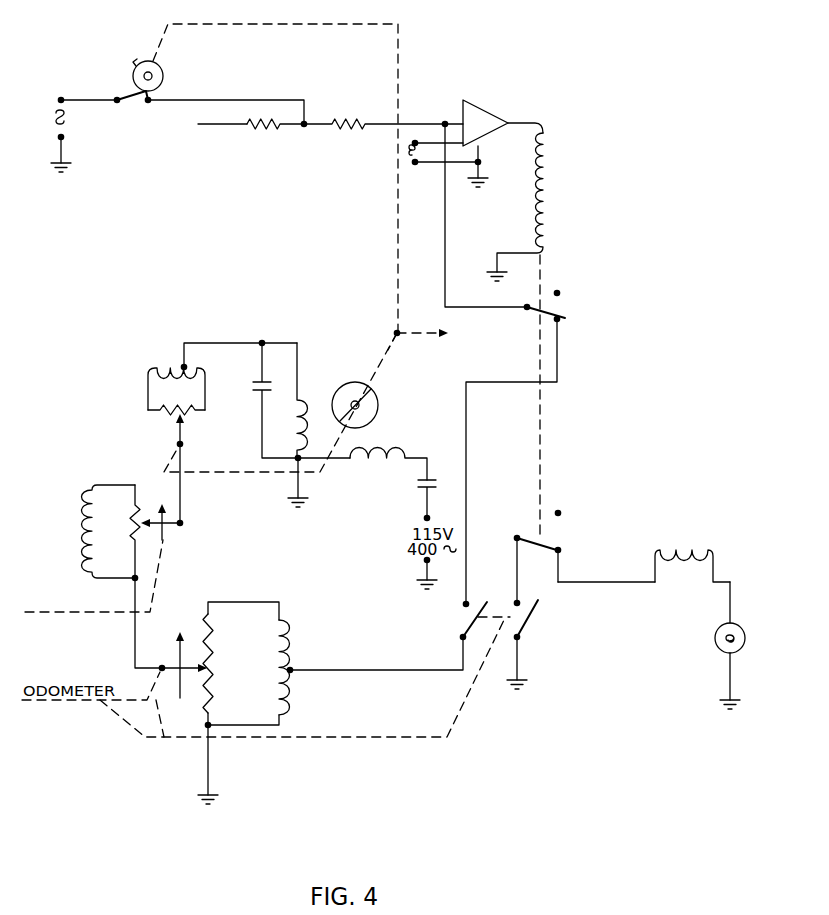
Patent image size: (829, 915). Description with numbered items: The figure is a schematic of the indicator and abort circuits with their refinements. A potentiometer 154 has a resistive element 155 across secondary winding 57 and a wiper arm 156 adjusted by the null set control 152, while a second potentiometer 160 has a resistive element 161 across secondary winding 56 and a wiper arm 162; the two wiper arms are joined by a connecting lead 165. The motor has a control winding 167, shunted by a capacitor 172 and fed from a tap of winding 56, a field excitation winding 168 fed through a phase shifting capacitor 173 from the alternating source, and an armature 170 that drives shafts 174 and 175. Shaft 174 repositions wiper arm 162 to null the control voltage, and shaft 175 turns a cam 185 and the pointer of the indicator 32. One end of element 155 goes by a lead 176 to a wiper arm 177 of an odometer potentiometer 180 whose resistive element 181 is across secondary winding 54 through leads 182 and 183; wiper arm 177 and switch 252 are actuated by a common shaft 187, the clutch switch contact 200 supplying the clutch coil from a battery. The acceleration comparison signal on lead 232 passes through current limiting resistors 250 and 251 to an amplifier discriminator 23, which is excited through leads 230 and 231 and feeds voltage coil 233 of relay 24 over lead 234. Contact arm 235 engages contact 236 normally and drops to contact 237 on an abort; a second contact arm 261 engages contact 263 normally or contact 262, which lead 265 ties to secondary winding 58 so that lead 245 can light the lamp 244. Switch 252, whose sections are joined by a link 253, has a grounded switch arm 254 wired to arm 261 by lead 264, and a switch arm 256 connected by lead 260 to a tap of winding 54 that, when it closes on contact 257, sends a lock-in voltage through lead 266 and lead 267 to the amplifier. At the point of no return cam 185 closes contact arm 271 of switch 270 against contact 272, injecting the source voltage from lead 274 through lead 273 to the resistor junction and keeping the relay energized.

The cam 185 is at (137, 63).
The connecting lead 274 is at (93, 101).
The contact arm 271 is at (125, 101).
The contact 272 is at (150, 102).
The switch 270 is at (155, 149).
The connecting lead 273 is at (303, 100).
The connecting lead 232 is at (222, 125).
The resistor 250 is at (277, 135).
The resistor 251 is at (374, 135).
The connecting lead 230 is at (438, 131).
The connecting lead 231 is at (458, 170).
The amplifier discriminator 23 is at (482, 112).
The connecting lead 234 is at (521, 124).
The relay 24 is at (622, 156).
The voltage coil 233 is at (552, 215).
The connecting lead 267 is at (446, 270).
The contact 236 is at (560, 294).
The contact arm 235 is at (535, 319).
The contact 237 is at (561, 323).
The indicator 32 is at (477, 371).
The shaft 175 is at (398, 361).
The armature 170 is at (378, 411).
The control winding 167 is at (306, 405).
The capacitor 172 is at (256, 385).
The secondary winding 56 is at (166, 366).
The potentiometer 160 is at (188, 401).
The resistive element 161 is at (168, 414).
The wiper arm 162 is at (182, 430).
The connecting lead 165 is at (181, 492).
The shaft 174 is at (230, 474).
The field excitation winding 168 is at (385, 468).
The capacitor 173 is at (434, 480).
The secondary winding 57 is at (82, 522).
The potentiometer 154 is at (127, 513).
The resistive element 155 is at (132, 533).
The wiper arm 156 is at (166, 540).
The null set control 152 is at (164, 602).
The connection lead 176 is at (150, 666).
The wiper arm 177 is at (200, 666).
The resistive element 181 is at (227, 663).
The potentiometer 180 is at (247, 675).
The connecting lead 182 is at (242, 602).
The connecting lead 183 is at (261, 724).
The secondary winding 54 is at (292, 664).
The connecting lead 260 is at (408, 671).
The connecting lead 266 is at (466, 512).
The contact 257 is at (463, 606).
The switch arm 256 is at (468, 618).
The switch 252 is at (508, 589).
The common link 253 is at (530, 610).
The switch arm 254 is at (528, 626).
The connecting lead 264 is at (519, 562).
The contact arm 261 is at (543, 544).
The contact 262 is at (560, 553).
The contact 263 is at (561, 513).
The connecting lead 265 is at (621, 581).
The secondary winding 58 is at (680, 552).
The connecting lead 245 is at (731, 606).
The lamp 244 is at (745, 640).
The contact 200 is at (470, 692).
The common shaft 187 is at (160, 720).